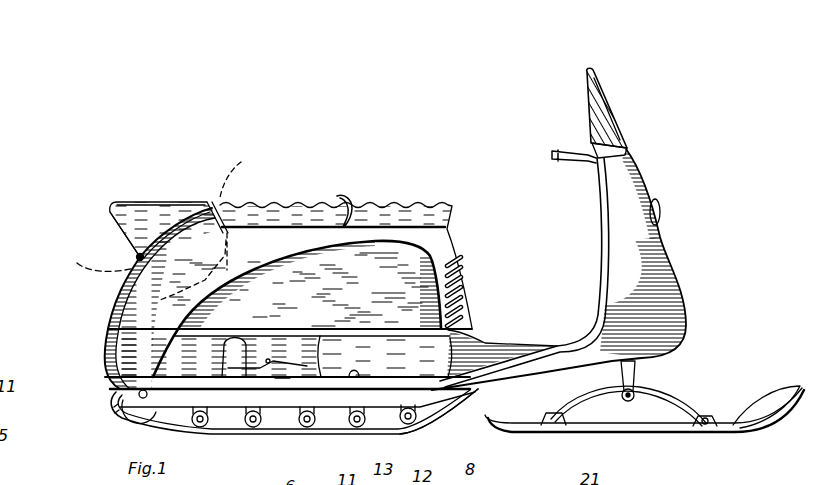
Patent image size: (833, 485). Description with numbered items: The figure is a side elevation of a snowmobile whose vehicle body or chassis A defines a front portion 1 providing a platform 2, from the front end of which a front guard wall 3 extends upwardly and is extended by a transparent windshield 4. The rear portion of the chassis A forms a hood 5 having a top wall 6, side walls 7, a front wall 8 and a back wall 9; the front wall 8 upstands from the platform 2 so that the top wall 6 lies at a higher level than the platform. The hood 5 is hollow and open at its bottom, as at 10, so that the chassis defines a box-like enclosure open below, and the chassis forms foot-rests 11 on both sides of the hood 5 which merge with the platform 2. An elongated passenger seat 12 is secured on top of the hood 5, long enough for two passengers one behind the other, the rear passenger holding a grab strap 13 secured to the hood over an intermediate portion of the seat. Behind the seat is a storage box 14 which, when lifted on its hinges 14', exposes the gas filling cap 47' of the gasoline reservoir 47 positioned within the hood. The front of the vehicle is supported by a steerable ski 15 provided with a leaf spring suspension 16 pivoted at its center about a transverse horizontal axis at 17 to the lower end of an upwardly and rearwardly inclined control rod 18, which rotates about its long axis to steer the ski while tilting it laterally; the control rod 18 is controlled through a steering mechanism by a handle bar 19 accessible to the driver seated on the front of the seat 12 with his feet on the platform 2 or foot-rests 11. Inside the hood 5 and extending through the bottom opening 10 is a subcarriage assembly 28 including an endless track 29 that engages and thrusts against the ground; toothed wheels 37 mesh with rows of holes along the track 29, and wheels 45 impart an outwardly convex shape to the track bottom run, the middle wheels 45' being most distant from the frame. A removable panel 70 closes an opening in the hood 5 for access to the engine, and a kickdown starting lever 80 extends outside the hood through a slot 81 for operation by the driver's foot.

The front portion 1 is at (527, 374).
The platform 2 is at (514, 337).
The front guard wall 3 is at (646, 266).
The transparent windshield 4 is at (620, 122).
The hood 5 is at (107, 308).
The top wall 6 is at (277, 226).
The side walls 7 is at (118, 293).
The front wall 8 is at (467, 280).
The back wall 9 is at (115, 321).
The bottom opening 10 is at (198, 431).
The foot-rests 11 is at (356, 388).
The passenger seat 12 is at (393, 213).
The grab strap 13 is at (341, 210).
The storage box 14 is at (169, 216).
The hinges 14' is at (113, 234).
The ski 15 is at (660, 435).
The leaf spring suspension 16 is at (688, 403).
The pivot axis 17 is at (660, 393).
The control rod 18 is at (636, 362).
The handle bar 19 is at (587, 162).
The subcarriage assembly 28 is at (446, 399).
The endless track 29 is at (400, 424).
The toothed wheels 37 is at (122, 410).
The wheels 45 is at (345, 436).
The middle wheels 45' is at (284, 434).
The gasoline reservoir 47 is at (98, 257).
The gas filling cap 47' is at (214, 224).
The removable panel 70 is at (418, 246).
The kickdown starting lever 80 is at (283, 378).
The slot 81 is at (226, 364).
The chassis A is at (686, 324).